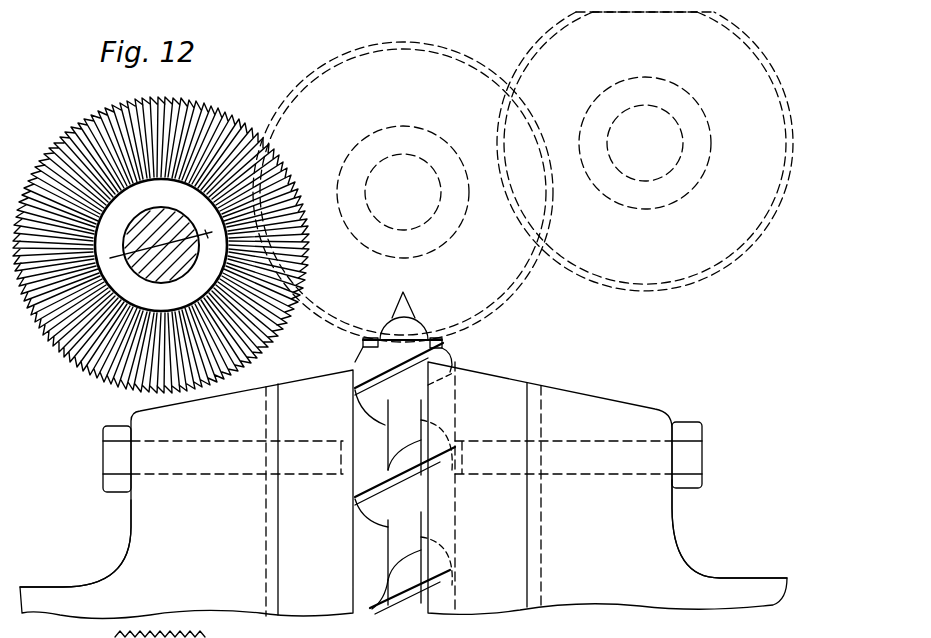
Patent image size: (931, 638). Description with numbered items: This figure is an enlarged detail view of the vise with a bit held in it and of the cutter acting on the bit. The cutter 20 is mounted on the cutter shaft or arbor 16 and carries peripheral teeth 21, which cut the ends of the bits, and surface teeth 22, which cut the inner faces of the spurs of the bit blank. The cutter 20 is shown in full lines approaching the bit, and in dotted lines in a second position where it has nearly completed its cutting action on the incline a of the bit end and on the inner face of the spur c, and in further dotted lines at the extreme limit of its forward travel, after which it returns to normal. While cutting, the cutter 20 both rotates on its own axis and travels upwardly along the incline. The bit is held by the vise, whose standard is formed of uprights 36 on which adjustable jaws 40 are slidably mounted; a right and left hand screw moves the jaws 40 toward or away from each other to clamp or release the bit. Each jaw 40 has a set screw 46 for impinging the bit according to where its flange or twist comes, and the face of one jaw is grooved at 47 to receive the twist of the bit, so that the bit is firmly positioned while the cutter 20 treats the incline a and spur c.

The cutter shaft or arbor 16 is at (140, 267).
The cutter 20 is at (161, 232).
The peripheral teeth 21 is at (161, 234).
The surface teeth 22 is at (119, 120).
The uprights 36 is at (147, 525).
The adjustable jaws 40 is at (403, 500).
The set screw 46 is at (112, 465).
The groove 47 is at (420, 451).
The incline a is at (363, 355).
The spur c is at (388, 323).